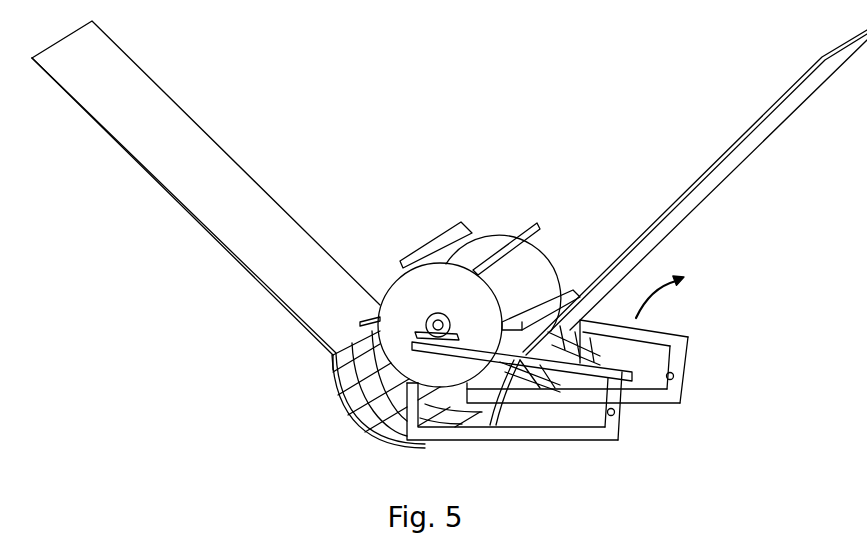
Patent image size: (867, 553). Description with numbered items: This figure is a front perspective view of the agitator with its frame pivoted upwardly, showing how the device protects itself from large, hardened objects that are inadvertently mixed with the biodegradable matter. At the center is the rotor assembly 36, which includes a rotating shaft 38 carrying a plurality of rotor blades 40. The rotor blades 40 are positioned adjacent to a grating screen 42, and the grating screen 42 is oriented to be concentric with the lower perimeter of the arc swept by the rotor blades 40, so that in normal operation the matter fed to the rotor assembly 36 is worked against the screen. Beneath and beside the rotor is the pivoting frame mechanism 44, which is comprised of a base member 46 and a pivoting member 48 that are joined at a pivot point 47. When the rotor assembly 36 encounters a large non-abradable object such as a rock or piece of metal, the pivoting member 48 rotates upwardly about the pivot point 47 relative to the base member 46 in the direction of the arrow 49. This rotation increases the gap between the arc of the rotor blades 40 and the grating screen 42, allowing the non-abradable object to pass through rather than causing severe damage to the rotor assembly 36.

The rotor assembly 36 is at (405, 360).
The rotating shaft 38 is at (478, 245).
The rotor blades 40 is at (440, 242).
The grating screen 42 is at (340, 382).
The pivoting frame mechanism 44 is at (703, 367).
The base member 46 is at (651, 403).
The pivot point 47 is at (679, 381).
The pivoting member 48 is at (680, 342).
The arrow 49 is at (678, 274).